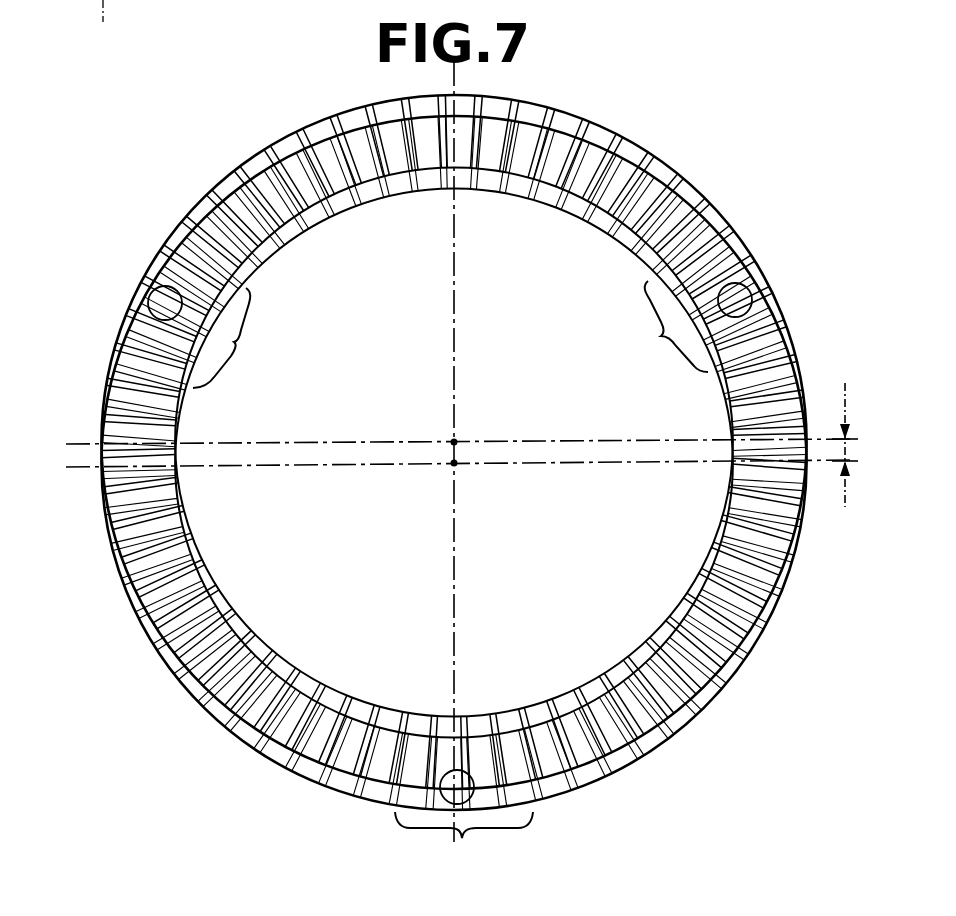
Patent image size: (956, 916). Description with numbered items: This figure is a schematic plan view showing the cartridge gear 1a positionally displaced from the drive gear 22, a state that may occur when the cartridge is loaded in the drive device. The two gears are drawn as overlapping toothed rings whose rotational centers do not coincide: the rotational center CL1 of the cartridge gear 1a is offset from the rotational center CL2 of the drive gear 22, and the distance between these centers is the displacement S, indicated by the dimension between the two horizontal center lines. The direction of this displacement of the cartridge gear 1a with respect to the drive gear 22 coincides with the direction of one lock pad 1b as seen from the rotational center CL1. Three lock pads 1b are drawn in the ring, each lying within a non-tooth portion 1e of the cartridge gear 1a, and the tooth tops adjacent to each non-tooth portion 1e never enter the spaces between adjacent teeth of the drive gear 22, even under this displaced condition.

The cartridge gear 1a is at (357, 794).
The lock pad 1b is at (151, 291).
The non-tooth portion 1e is at (450, 575).
The drive gear 22 is at (557, 767).
The rotational center of the cartridge gear CL1 is at (455, 465).
The rotational center of the drive gear CL2 is at (455, 441).
The displacement between the gear rotational centers S is at (858, 445).